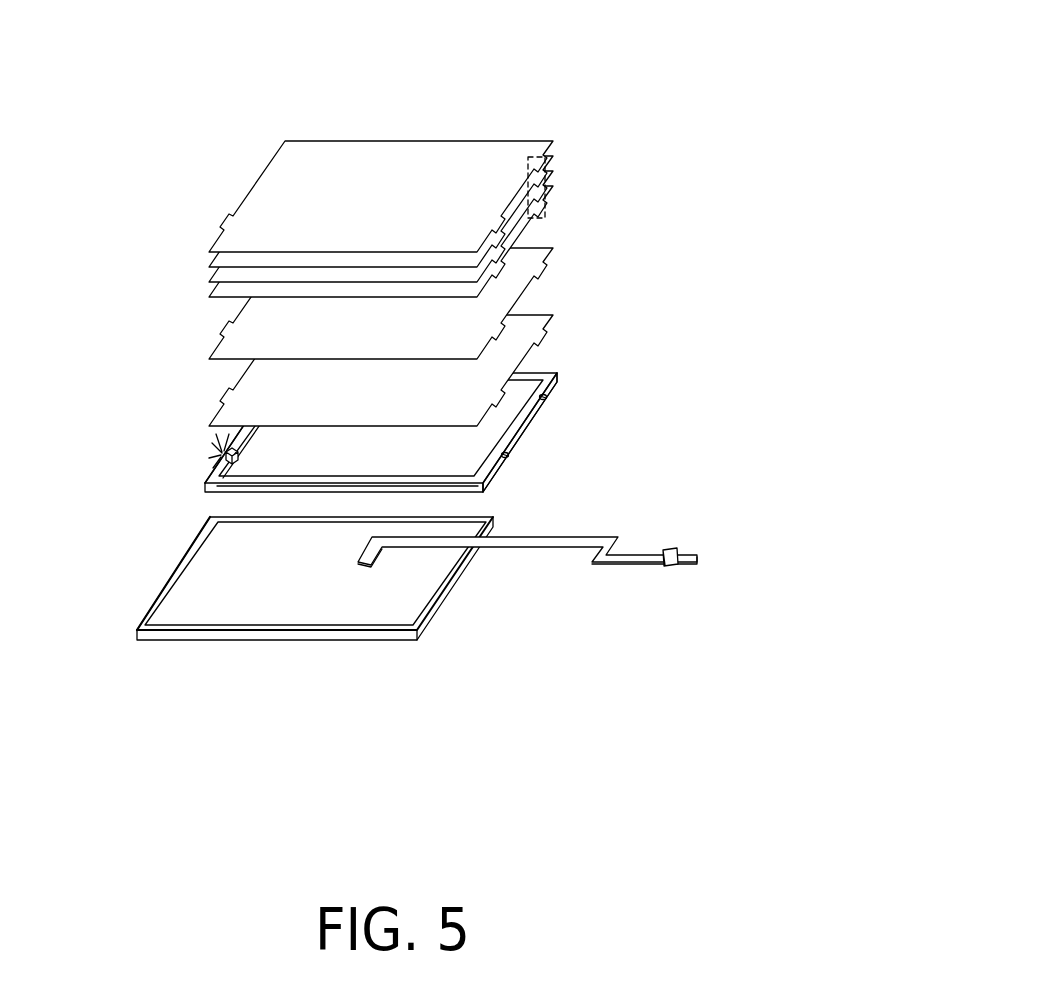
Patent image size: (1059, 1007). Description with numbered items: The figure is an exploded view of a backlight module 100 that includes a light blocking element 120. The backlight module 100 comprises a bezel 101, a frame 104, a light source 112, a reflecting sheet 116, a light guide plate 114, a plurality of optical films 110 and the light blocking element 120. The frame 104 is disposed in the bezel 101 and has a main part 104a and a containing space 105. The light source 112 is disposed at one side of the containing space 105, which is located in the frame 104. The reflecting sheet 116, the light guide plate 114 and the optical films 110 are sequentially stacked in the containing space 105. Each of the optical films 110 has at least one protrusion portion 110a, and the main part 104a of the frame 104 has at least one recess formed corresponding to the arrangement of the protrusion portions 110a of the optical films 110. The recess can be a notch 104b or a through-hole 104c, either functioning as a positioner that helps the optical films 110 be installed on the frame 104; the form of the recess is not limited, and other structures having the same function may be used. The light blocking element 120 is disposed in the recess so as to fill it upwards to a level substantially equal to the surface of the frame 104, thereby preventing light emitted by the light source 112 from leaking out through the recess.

The backlight module 100 is at (722, 46).
The bezel 101 is at (297, 632).
The frame 104 is at (349, 462).
The main part 104a is at (558, 374).
The notch 104b is at (225, 456).
The through-hole 104c is at (508, 456).
The containing space 105 is at (283, 445).
The optical films 110 is at (425, 187).
The protrusion portion 110a is at (528, 170).
The light source 112 is at (655, 555).
The light guide plate 114 is at (554, 249).
The reflecting sheet 116 is at (554, 316).
The light blocking element 120 is at (133, 497).